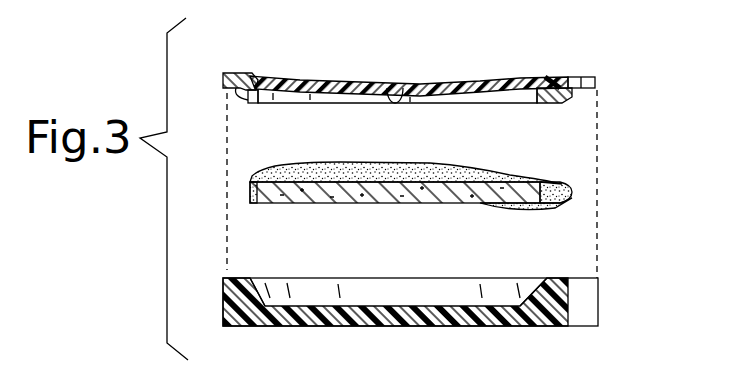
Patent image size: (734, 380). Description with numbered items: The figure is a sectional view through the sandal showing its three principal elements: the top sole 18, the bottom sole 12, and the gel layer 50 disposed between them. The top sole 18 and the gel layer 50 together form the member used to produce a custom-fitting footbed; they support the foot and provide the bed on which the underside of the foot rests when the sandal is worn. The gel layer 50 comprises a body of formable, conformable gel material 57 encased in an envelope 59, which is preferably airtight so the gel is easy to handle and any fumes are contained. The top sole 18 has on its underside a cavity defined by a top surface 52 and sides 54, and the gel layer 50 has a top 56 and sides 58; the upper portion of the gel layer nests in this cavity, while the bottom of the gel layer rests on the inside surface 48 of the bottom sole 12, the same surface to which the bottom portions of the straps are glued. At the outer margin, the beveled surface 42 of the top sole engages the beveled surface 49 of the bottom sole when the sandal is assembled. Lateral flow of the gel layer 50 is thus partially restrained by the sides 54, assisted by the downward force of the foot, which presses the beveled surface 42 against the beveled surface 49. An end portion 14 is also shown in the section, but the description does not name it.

The bottom sole 12 is at (598, 300).
The frame 14 is at (597, 80).
The top sole 18 is at (490, 76).
The beveled surface 42 is at (240, 95).
The inside surface 48 is at (496, 300).
The beveled surface 49 is at (249, 292).
The gel layer 50 is at (432, 193).
The top surface 52 is at (404, 88).
The sides 54 is at (273, 92).
The top 56 is at (390, 165).
The gel material 57 is at (318, 192).
The sides 58 is at (250, 192).
The envelope 59 is at (425, 195).